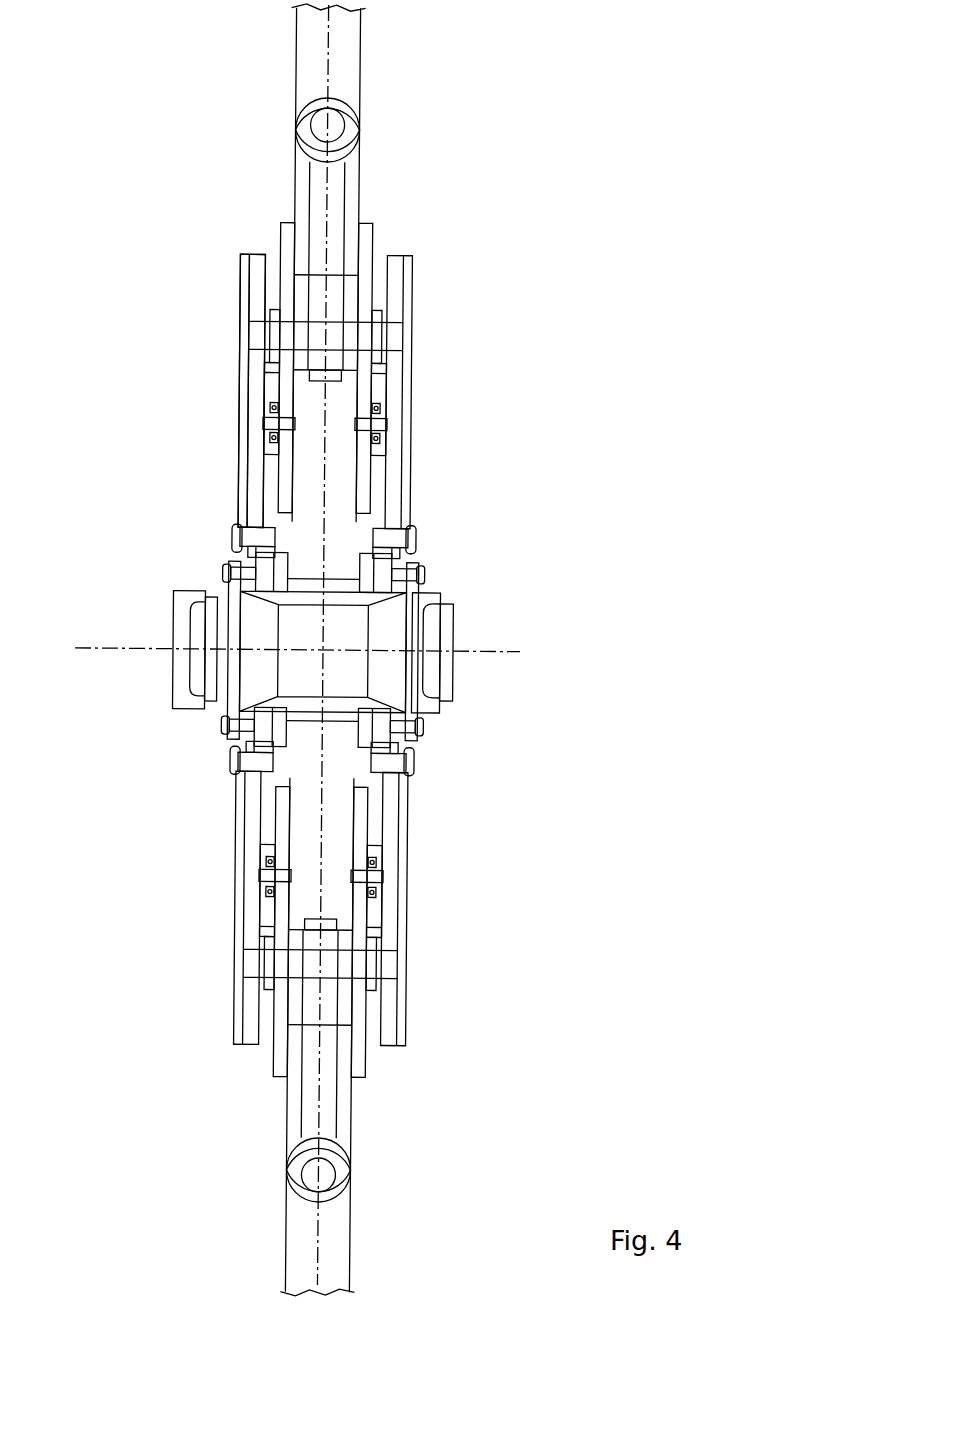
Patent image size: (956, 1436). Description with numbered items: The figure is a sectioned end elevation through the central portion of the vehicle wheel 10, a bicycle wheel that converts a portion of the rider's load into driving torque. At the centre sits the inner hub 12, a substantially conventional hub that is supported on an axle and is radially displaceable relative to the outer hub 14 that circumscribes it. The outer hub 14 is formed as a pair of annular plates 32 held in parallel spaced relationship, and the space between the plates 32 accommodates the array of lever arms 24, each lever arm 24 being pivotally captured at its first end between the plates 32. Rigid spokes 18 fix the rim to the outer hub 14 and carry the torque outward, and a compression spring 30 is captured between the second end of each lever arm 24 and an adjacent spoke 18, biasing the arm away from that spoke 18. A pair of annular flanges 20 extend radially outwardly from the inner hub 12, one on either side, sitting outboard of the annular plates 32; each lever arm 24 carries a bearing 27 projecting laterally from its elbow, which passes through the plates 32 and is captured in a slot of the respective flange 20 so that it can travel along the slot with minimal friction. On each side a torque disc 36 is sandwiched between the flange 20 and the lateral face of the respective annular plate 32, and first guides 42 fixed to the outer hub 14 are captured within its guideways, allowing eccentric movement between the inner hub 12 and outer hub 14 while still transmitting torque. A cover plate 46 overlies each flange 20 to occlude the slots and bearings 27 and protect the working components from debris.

The vehicle wheel 10 is at (164, 79).
The inner hub 12 is at (432, 675).
The outer hub 14 is at (385, 243).
The spokes 18 is at (352, 58).
The annular flanges 20 is at (393, 473).
The lever arms 24 is at (340, 190).
The bearing 27 is at (255, 317).
The compression spring 30 is at (347, 123).
The annular plates 32 is at (285, 265).
The torque disc 36 is at (270, 467).
The first guides 42 is at (380, 877).
The cover plate 46 is at (240, 293).